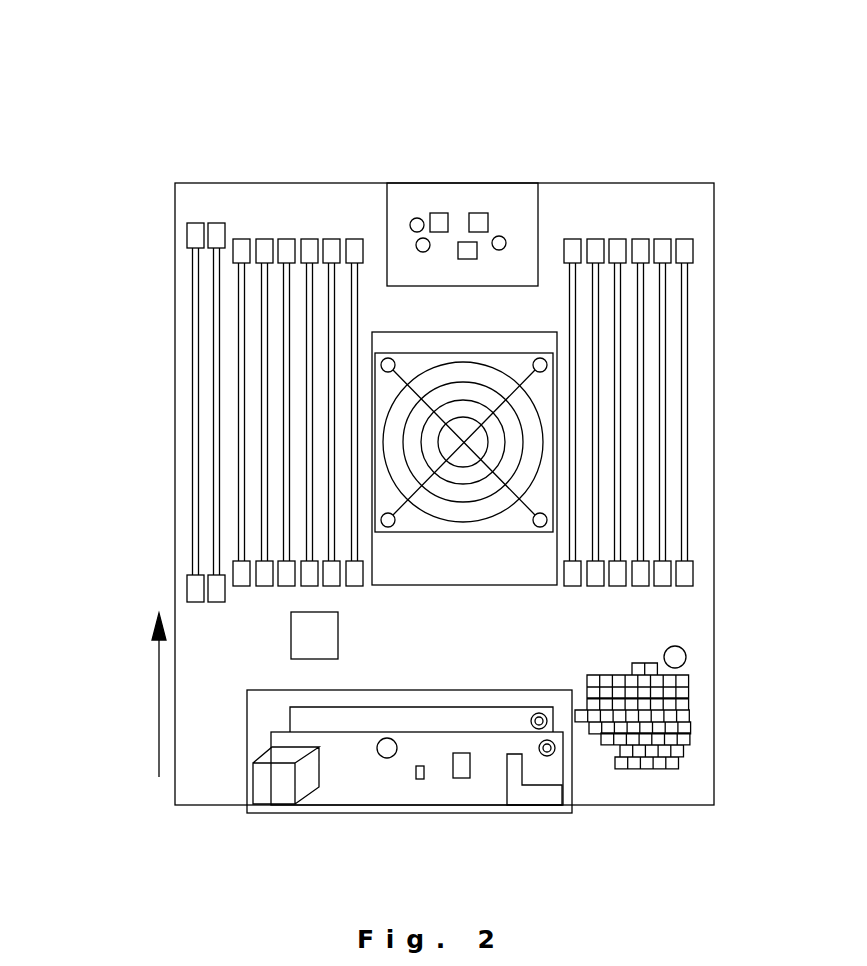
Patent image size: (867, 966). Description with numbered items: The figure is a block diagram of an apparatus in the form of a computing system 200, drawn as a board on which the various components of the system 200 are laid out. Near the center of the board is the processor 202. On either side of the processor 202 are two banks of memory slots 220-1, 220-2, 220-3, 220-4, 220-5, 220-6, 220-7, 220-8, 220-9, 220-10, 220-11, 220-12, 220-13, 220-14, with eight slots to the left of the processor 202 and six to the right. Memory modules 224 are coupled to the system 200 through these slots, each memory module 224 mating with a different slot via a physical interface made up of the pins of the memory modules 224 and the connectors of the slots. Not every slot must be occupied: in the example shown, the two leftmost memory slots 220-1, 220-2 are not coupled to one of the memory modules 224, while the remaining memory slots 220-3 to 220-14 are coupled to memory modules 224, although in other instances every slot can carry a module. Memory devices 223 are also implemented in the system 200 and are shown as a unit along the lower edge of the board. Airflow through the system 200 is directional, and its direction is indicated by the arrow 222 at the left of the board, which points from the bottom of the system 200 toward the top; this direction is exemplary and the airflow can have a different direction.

The computing system 200 is at (372, 52).
The processor 202 is at (377, 547).
The memory slot 220-1 is at (189, 241).
The memory slot 220-2 is at (195, 234).
The memory slot 220-3 is at (241, 242).
The memory slot 220-4 is at (265, 242).
The memory slot 220-5 is at (287, 242).
The memory slot 220-6 is at (309, 242).
The memory slot 220-7 is at (330, 242).
The memory slot 220-8 is at (354, 242).
The memory slot 220-9 is at (573, 242).
The memory slot 220-10 is at (595, 242).
The memory slot 220-11 is at (618, 242).
The memory slot 220-12 is at (639, 242).
The memory slot 220-13 is at (661, 242).
The memory slot 220-14 is at (684, 242).
The arrow 222 is at (159, 706).
The memory devices 223 is at (370, 814).
The memory modules 224 is at (240, 391).